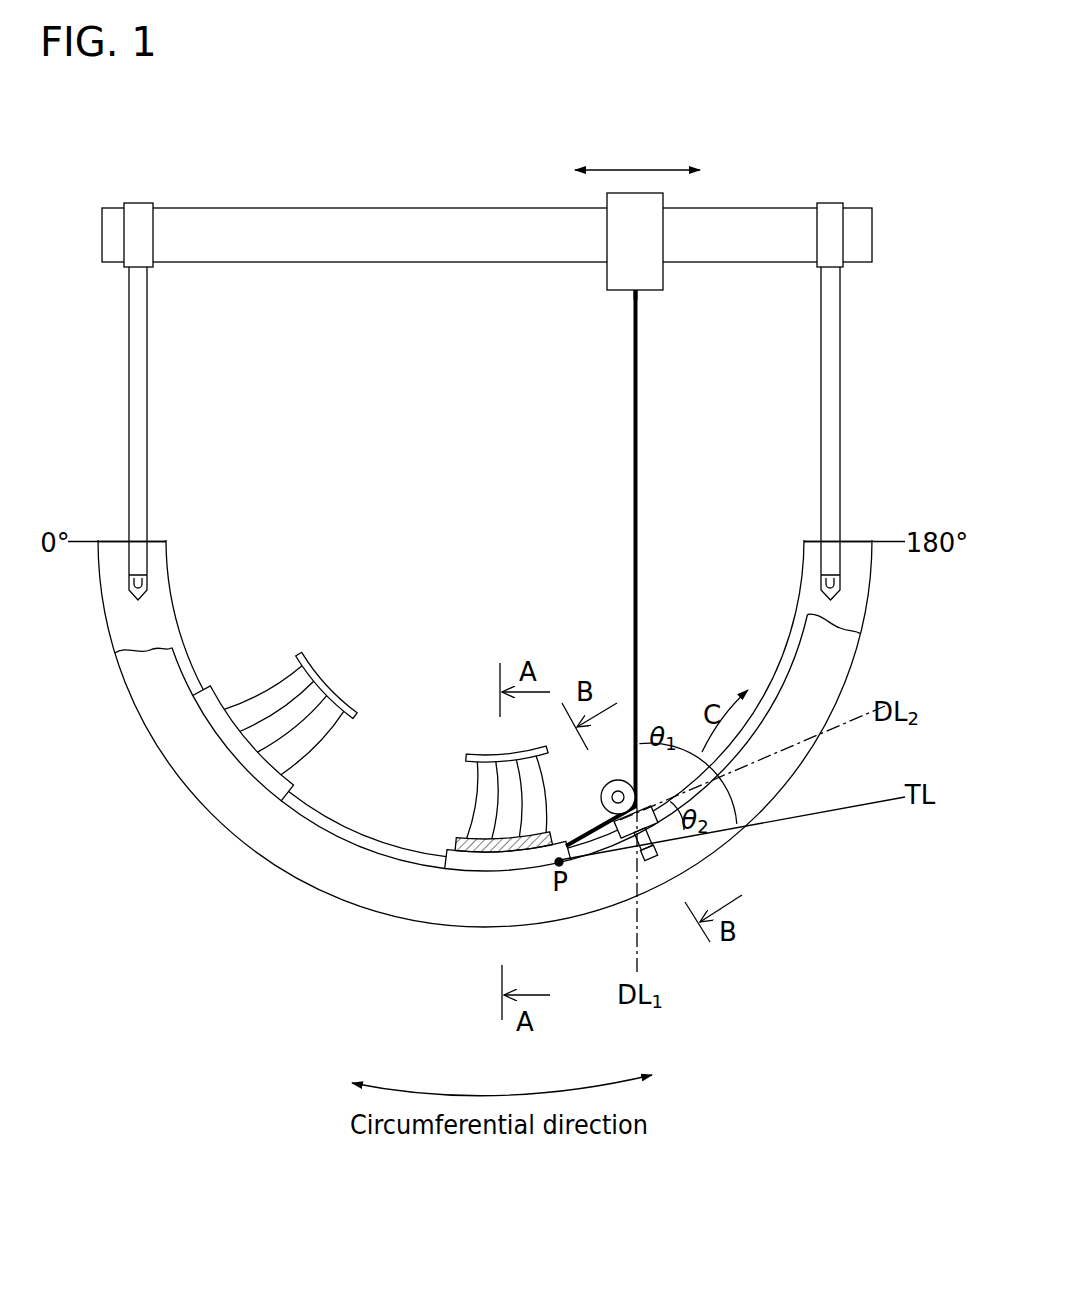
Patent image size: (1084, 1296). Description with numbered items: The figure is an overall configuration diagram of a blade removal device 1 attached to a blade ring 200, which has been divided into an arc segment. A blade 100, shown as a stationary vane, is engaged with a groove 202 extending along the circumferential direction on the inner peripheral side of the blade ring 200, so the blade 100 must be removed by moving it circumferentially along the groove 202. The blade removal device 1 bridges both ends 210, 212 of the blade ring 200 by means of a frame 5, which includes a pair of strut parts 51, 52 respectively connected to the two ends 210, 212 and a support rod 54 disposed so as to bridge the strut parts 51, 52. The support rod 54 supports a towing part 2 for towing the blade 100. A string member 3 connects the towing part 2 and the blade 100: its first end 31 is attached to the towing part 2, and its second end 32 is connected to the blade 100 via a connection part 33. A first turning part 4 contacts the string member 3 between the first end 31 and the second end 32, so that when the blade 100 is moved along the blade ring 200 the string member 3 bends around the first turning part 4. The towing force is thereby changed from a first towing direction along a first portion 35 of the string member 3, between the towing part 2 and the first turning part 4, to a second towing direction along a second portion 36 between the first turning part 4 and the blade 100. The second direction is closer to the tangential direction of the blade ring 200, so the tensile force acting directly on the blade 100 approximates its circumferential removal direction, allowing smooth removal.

The blade removal device 1 is at (486, 469).
The towing part 2 is at (607, 284).
The string member 3 is at (635, 568).
The first turning part 4 is at (612, 785).
The frame 5 is at (487, 188).
The first end 31 is at (640, 293).
The second end 32 is at (552, 836).
The connection part 33 is at (450, 852).
The first portion 35 is at (640, 480).
The second portion 36 is at (598, 812).
The strut part 51 is at (128, 378).
The strut part 52 is at (842, 378).
The support rod 54 is at (288, 208).
The blade 100 is at (290, 665).
The blade ring 200 is at (470, 915).
The groove 202 is at (345, 856).
The end of blade ring 210 is at (158, 543).
The end of blade ring 212 is at (803, 543).